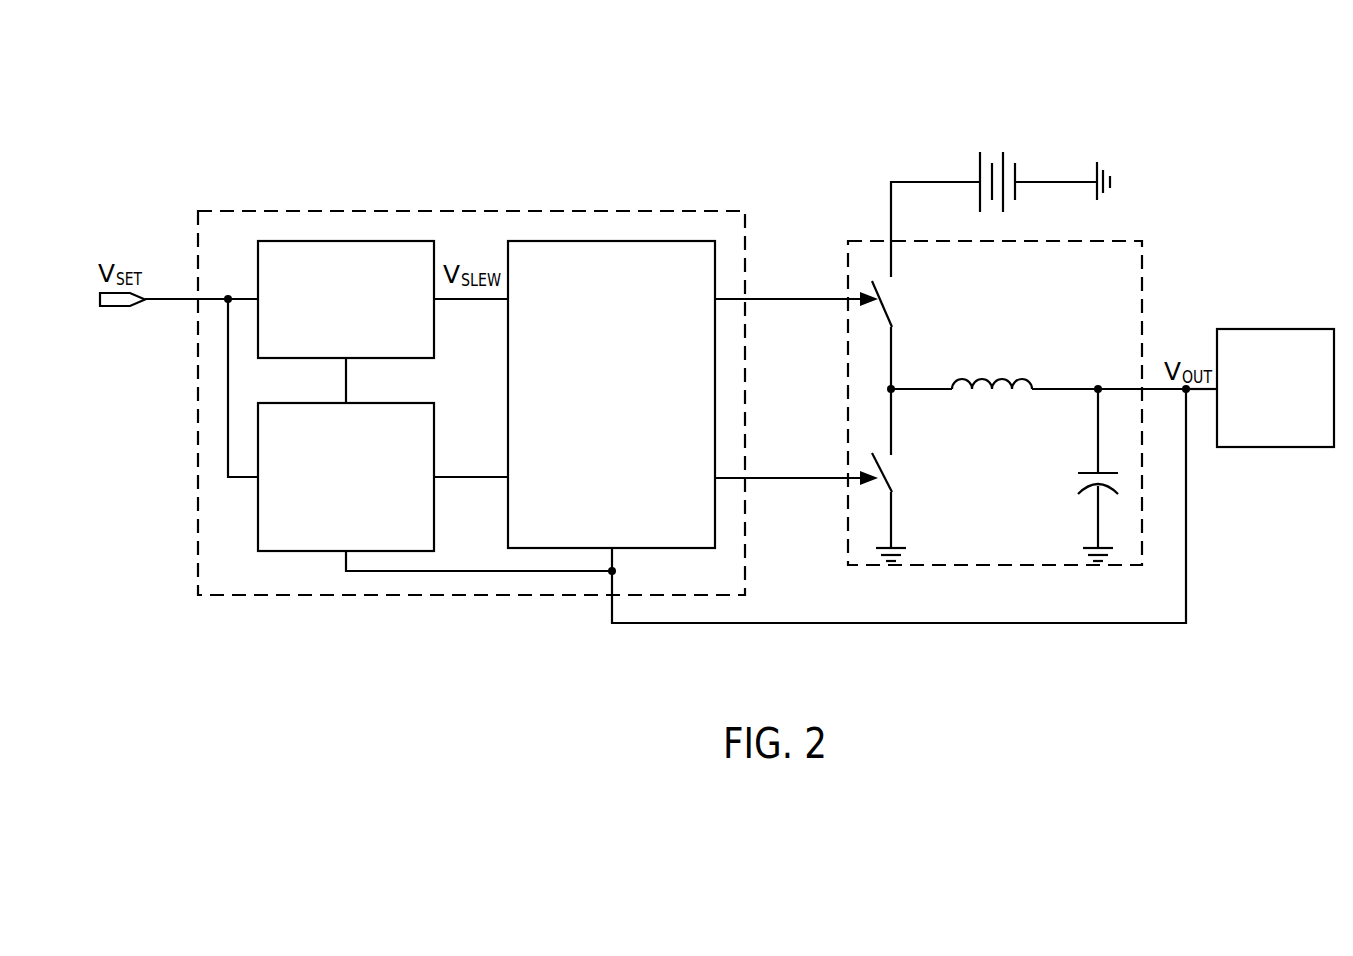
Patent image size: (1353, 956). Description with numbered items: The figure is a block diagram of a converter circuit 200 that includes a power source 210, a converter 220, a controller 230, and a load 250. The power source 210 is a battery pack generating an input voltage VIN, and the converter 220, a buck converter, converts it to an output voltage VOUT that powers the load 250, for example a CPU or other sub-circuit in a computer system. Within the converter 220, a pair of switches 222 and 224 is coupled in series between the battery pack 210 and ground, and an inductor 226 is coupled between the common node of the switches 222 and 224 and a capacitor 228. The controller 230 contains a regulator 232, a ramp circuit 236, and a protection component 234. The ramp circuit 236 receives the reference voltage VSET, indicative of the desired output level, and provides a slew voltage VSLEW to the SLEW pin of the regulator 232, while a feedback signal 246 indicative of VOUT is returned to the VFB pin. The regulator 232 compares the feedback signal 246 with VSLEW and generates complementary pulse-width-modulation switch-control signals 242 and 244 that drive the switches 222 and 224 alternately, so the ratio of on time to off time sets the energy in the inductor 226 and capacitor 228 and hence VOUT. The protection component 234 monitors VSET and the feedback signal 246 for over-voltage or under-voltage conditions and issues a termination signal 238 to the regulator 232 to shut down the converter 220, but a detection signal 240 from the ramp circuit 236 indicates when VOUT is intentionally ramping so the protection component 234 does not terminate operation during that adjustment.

The converter circuit 200 is at (312, 140).
The power source 210 is at (1003, 165).
The converter 220 is at (1142, 241).
The switch 222 is at (893, 305).
The switch 224 is at (893, 482).
The inductor 226 is at (1022, 377).
The capacitor 228 is at (1085, 471).
The controller 230 is at (673, 211).
The regulator 232 is at (632, 425).
The protection component 234 is at (365, 525).
The ramp circuit 236 is at (365, 348).
The termination signal 238 is at (437, 475).
The detection signal 240 is at (347, 397).
The switch-control signal 242 is at (780, 299).
The switch-control signal 244 is at (777, 478).
The feedback signal 246 is at (947, 623).
The load 250 is at (1294, 419).